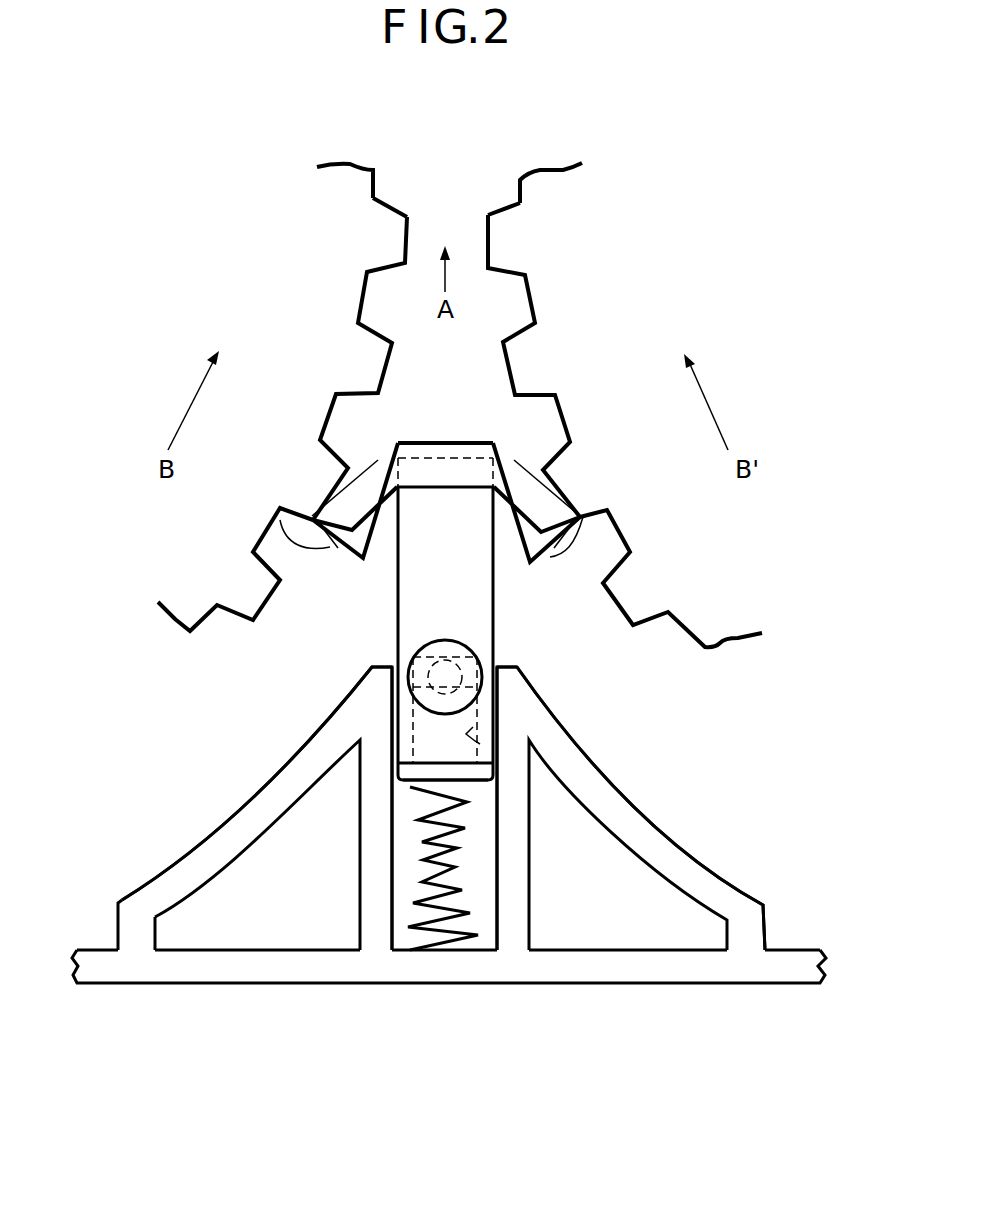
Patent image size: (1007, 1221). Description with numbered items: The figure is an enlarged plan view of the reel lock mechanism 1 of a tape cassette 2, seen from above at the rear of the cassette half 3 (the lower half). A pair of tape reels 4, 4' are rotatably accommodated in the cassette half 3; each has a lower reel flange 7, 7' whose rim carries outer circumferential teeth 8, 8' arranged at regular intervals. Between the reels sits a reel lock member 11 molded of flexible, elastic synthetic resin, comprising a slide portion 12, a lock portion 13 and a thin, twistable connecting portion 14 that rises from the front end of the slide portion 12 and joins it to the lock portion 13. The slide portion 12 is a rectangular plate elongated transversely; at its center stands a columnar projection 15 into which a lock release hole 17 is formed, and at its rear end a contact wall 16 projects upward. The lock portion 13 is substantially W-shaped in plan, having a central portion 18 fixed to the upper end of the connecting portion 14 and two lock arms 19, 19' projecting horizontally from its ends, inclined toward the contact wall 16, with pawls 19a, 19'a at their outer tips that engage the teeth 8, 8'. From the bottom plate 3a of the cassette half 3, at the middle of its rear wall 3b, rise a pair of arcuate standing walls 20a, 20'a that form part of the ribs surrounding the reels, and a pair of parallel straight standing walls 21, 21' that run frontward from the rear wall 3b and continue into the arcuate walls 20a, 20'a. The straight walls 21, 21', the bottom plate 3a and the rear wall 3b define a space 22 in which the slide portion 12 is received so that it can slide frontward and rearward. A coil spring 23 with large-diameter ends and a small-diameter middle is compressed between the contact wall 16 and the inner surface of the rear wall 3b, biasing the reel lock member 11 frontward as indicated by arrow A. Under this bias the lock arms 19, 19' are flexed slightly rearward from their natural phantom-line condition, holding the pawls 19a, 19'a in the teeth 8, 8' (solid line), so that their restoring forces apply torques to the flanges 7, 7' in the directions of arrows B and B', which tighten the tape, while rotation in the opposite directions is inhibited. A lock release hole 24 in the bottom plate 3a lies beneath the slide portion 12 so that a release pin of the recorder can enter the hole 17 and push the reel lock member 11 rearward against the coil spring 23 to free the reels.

The reel lock mechanism 1 is at (665, 256).
The tape cassette 2 is at (772, 987).
The cassette half 3 is at (650, 975).
The bottom plate 3a is at (147, 860).
The rear wall 3b is at (447, 975).
The tape reel 4 is at (369, 164).
The tape reel 4' is at (519, 166).
The reel flange 7 is at (390, 196).
The reel flange 7' is at (499, 195).
The outer circumferential teeth 8 is at (304, 435).
The outer circumferential teeth 8' is at (609, 444).
The reel lock member 11 is at (512, 458).
The slide portion 12 is at (495, 606).
The lock portion 13 is at (450, 442).
The connecting portion 14 is at (418, 457).
The columnar projection 15 is at (483, 662).
The contact wall 16 is at (486, 781).
The lock release hole 17 is at (477, 686).
The central portion 18 is at (490, 420).
The lock arm 19 is at (319, 457).
The lock arm 19' is at (586, 490).
The pawl 19a is at (313, 505).
The pawl 19'a is at (626, 531).
The arcuate standing wall 20a is at (227, 837).
The arcuate standing wall 20'a is at (641, 808).
The straight standing wall 21 is at (260, 888).
The straight standing wall 21' is at (624, 888).
The space 22 is at (493, 865).
The coil spring 23 is at (490, 891).
The lock release hole 24 is at (480, 741).